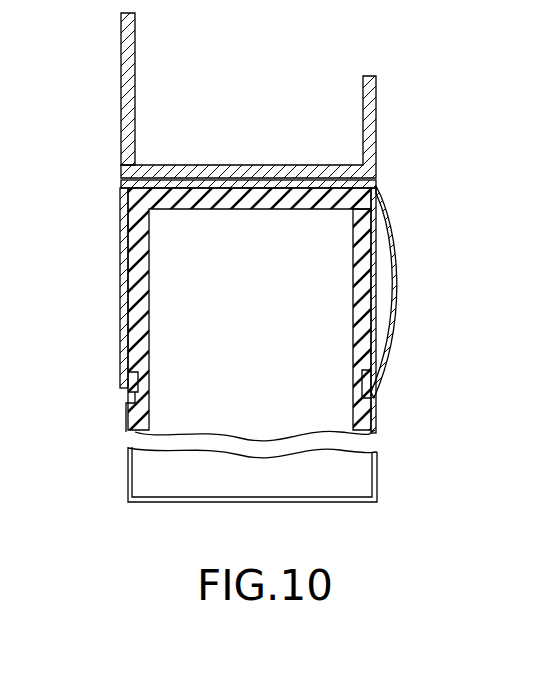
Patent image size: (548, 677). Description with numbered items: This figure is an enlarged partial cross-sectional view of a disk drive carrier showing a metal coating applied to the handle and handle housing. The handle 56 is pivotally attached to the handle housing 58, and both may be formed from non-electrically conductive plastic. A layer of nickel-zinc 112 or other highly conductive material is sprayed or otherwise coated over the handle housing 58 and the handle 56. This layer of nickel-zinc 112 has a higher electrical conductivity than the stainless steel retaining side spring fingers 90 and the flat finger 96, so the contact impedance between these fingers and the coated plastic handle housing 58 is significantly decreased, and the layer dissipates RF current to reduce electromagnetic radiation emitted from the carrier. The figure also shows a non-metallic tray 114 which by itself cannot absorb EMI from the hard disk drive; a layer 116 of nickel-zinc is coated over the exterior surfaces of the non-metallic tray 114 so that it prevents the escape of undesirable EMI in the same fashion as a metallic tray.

The handle 56 is at (360, 475).
The handle housing 58 is at (360, 325).
The retaining side spring fingers 90 is at (400, 272).
The flat finger 96 is at (128, 268).
The layer of nickel-zinc 112 is at (258, 190).
The non-metallic tray 114 is at (136, 72).
The layer of nickel-zinc 116 is at (121, 44).